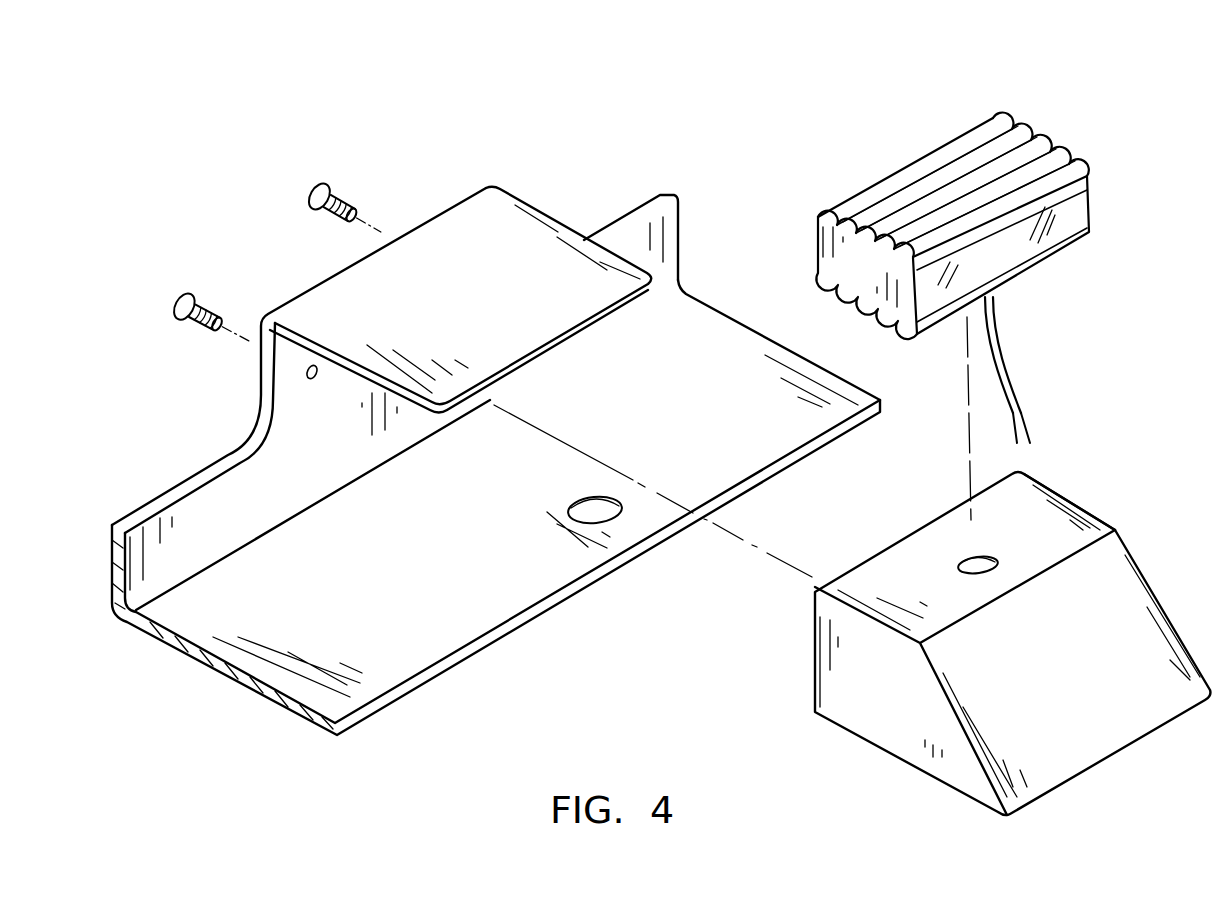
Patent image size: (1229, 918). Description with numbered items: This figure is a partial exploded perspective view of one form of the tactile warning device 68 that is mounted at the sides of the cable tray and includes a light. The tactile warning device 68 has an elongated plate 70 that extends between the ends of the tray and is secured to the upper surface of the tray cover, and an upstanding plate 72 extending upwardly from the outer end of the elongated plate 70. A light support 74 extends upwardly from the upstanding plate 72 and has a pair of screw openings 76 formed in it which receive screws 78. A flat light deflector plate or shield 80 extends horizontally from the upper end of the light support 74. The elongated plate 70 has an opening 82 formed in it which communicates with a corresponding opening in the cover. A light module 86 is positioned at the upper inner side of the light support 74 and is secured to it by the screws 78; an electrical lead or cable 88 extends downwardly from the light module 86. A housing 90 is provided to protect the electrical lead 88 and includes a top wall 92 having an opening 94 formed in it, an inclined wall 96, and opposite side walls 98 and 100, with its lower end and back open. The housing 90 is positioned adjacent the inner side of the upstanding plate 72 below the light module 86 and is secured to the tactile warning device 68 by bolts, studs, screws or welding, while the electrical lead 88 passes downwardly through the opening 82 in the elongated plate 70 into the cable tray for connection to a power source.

The tactile warning device 68 is at (596, 190).
The elongated plate 70 is at (697, 343).
The upstanding plate 72 is at (663, 248).
The light support 74 is at (261, 387).
The screw openings 76 is at (311, 376).
The screws 78 is at (327, 221).
The light deflector plate or shield 80 is at (499, 322).
The opening 82 is at (623, 512).
The light module 86 is at (1006, 113).
The electrical lead or cable 88 is at (1007, 378).
The housing 90 is at (1133, 538).
The top wall 92 is at (895, 580).
The opening 94 is at (970, 557).
The inclined wall 96 is at (1047, 686).
The side wall 98 is at (867, 714).
The side wall 100 is at (1080, 495).